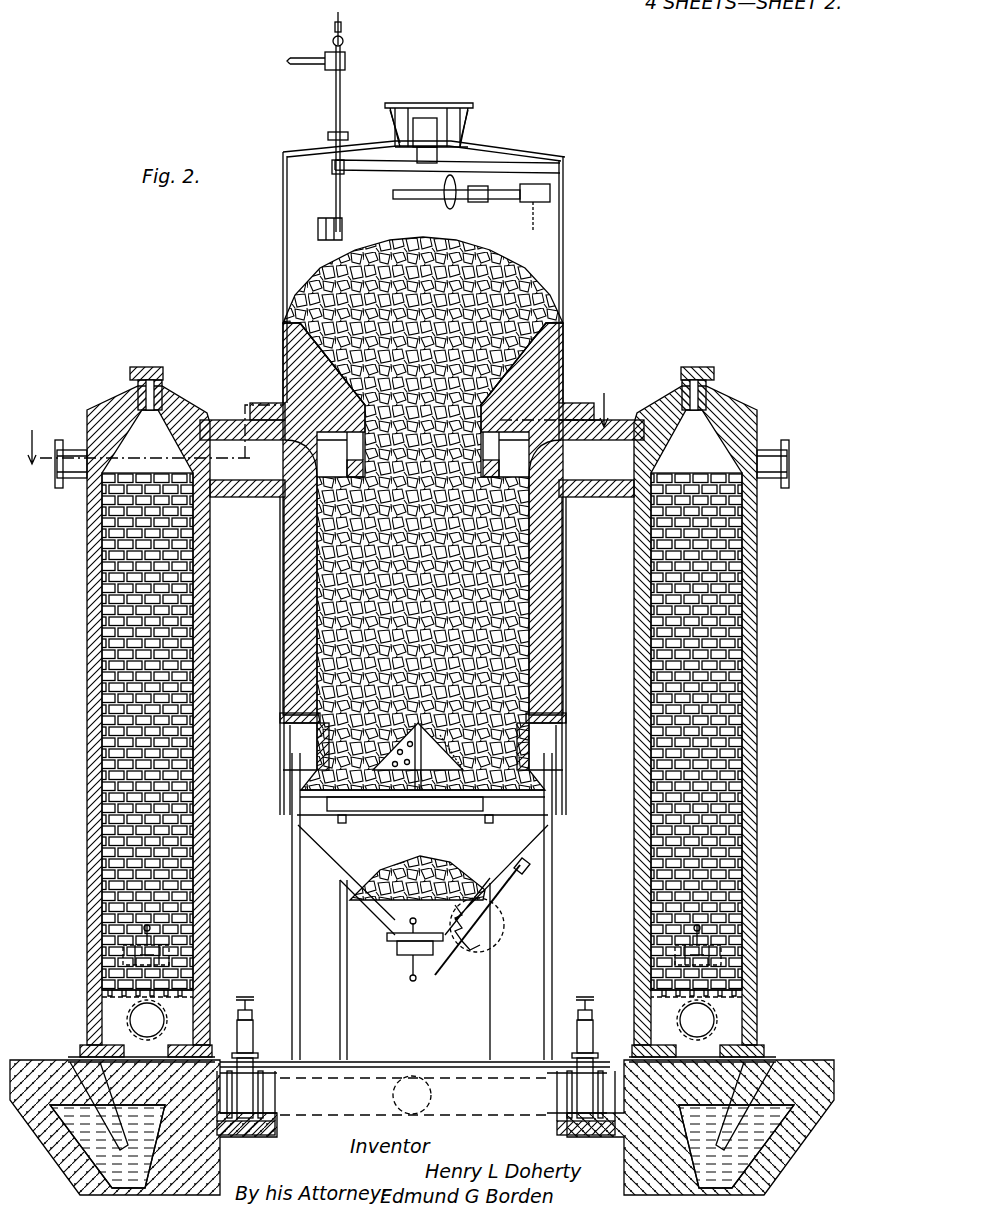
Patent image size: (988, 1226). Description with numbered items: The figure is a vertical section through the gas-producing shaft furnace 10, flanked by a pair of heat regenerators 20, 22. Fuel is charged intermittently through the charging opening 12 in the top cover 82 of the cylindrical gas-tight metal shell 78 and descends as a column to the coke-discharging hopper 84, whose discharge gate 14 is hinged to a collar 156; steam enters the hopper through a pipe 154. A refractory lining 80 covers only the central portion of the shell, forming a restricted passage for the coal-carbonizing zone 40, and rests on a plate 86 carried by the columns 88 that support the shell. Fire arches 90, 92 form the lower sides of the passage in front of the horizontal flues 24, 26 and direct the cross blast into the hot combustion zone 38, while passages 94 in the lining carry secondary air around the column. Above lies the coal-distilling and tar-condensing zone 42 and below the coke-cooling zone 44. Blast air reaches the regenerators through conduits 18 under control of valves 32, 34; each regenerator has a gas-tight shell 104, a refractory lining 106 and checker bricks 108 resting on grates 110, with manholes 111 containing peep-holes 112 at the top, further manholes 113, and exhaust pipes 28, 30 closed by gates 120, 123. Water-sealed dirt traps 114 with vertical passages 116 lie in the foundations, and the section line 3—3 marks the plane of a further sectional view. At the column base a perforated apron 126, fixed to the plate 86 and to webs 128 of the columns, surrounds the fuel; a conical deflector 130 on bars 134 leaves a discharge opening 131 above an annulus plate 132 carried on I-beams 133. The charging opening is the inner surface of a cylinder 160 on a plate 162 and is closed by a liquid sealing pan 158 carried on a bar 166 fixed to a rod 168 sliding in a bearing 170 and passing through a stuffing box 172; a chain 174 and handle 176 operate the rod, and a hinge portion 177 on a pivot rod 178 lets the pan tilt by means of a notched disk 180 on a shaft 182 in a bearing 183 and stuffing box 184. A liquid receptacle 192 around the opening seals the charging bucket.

The section line 3- 3 is at (315, 428).
The shaft furnace 10 is at (563, 345).
The charging opening 12 is at (436, 110).
The discharge gate 14 is at (410, 966).
The conduits 18 is at (328, 1120).
The regenerator 20 is at (210, 650).
The regenerator 22 is at (565, 625).
The horizontal flue 24 is at (225, 420).
The horizontal flue 26 is at (635, 425).
The exhaust pipe 28 is at (100, 1010).
The exhaust pipe 30 is at (750, 998).
The valve 32 is at (249, 1066).
The valve 34 is at (584, 1066).
The combustion zone 38 is at (500, 542).
The coal-carbonizing zone 40 is at (525, 388).
The coal-distilling and tar-condensing zone 42 is at (520, 288).
The coke-cooling zone 44 is at (530, 692).
The metal shell 78 is at (565, 230).
The refractory lining 80 is at (283, 356).
The top cover 82 is at (352, 148).
The coke-discharging hopper 84 is at (330, 860).
The plate 86 is at (283, 718).
The columns 88 is at (292, 900).
The fire arch 90 is at (317, 460).
The fire arch 92 is at (529, 460).
The secondary air passages 94 is at (300, 402).
The regenerator shell 104 is at (210, 560).
The regenerator refractory lining 106 is at (100, 668).
The checker bricks 108 is at (100, 712).
The grates 110 is at (100, 988).
The manholes 111 is at (162, 385).
The peep-holes 112 is at (150, 367).
The manholes 113 is at (62, 440).
The dirt traps 114 is at (90, 1160).
The vertical passages 116 is at (422, 1068).
The gate 120 is at (170, 948).
The gate 123 is at (735, 950).
The perforated apron 126 is at (317, 740).
The webs 128 is at (535, 742).
The conical deflector 130 is at (405, 795).
The discharge opening 131 is at (303, 772).
The annulus plate 132 is at (360, 813).
The I-beams 133 is at (341, 823).
The bars 134 is at (422, 800).
The steam pipe 154 is at (507, 880).
The collar 156 is at (388, 937).
The liquid sealing pan 158 is at (470, 150).
The cylinder 160 is at (436, 118).
The plate 162 is at (416, 106).
The bar 166 is at (367, 172).
The rod 168 is at (336, 196).
The bearing 170 is at (320, 242).
The stuffing box 172 is at (328, 136).
The chain 174 is at (342, 30).
The handle 176 is at (302, 64).
The hinge portion 177 is at (425, 168).
The pivot rod 178 is at (425, 200).
The notched disk 180 is at (450, 210).
The shaft 182 is at (503, 200).
The bearing 183 is at (476, 188).
The stuffing box 184 is at (538, 225).
The liquid receptacle 192 is at (463, 112).